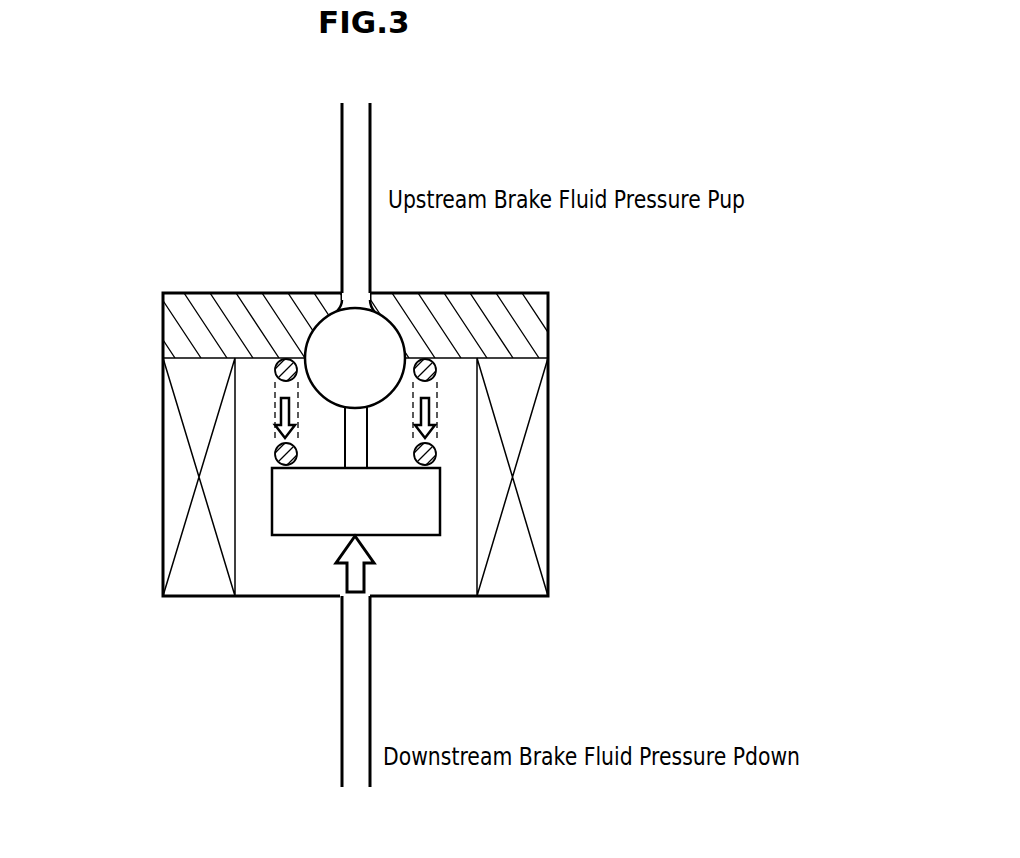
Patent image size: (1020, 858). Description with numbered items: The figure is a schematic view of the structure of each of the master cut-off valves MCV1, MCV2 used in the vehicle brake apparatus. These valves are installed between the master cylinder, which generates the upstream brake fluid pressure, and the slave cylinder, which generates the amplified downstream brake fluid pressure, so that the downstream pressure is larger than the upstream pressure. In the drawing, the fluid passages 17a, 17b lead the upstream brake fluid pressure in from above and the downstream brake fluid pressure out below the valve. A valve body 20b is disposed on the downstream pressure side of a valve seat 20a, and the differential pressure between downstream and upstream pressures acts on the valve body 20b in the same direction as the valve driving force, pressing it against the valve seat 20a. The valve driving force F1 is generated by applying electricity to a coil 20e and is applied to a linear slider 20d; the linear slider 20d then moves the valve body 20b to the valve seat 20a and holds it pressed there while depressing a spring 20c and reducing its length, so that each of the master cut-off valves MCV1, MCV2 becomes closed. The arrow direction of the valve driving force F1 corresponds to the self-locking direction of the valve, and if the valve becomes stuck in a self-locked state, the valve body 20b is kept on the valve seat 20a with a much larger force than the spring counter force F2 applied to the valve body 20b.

The brake fluid passage (pipe) 17a is at (439, 445).
The brake fluid passage (pipe) 17b is at (372, 142).
The valve seat 20a is at (538, 322).
The valve body 20b is at (370, 371).
The spring 20c is at (278, 378).
The linear slider 20d is at (282, 502).
The coil 20e is at (527, 517).
The master cut-off valve MCV1 is at (357, 445).
The master cut-off valve MCV2 is at (357, 445).
The valve driving force F1 is at (376, 564).
The spring counter force F2 is at (358, 418).